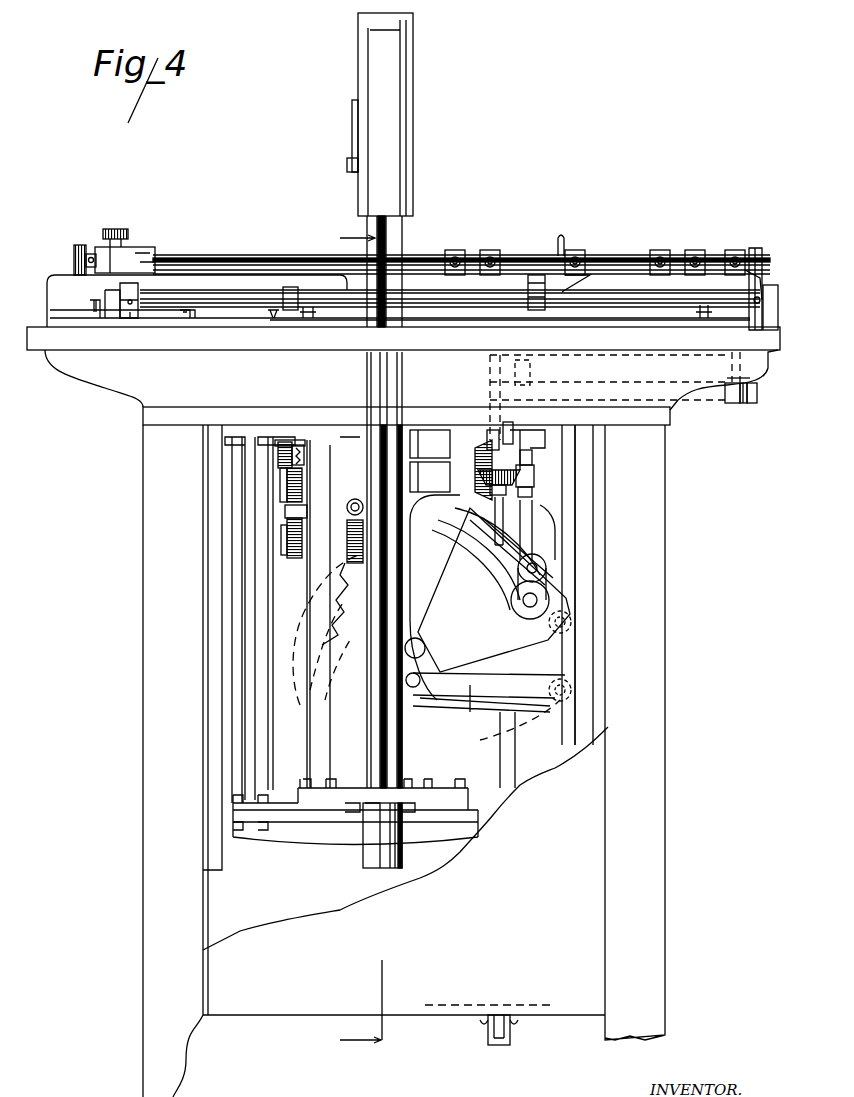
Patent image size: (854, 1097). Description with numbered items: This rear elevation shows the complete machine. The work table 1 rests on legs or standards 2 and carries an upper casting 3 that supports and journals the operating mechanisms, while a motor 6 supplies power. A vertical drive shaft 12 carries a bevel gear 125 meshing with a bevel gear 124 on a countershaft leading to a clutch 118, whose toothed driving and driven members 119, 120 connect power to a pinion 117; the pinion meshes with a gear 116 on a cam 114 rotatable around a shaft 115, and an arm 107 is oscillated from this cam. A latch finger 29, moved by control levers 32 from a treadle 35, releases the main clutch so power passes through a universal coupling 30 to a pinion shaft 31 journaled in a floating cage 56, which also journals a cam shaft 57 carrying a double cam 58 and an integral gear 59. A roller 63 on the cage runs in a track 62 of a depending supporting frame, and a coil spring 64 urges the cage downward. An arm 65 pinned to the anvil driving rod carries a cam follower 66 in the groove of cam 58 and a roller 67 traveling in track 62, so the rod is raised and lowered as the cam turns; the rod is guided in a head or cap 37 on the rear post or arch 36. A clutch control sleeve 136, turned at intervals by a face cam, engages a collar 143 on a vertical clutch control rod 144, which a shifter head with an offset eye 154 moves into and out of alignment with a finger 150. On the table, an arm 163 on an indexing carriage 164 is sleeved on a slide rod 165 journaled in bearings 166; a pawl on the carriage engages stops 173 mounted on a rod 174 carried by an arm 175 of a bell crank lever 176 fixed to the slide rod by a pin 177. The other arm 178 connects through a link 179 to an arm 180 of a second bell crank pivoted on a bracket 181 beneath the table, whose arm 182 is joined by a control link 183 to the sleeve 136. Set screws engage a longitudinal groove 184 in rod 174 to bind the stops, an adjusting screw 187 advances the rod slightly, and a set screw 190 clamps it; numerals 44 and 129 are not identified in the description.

The work table 1 is at (36, 345).
The legs 2 is at (190, 1016).
The upper casting 3 is at (116, 380).
The motor 6 is at (352, 640).
The drive shaft 12 is at (490, 597).
The latch finger 29 is at (540, 515).
The universal coupling 30 is at (548, 576).
The pinion shaft 31 is at (538, 601).
The control levers 32 is at (511, 551).
The treadle 35 is at (508, 1030).
The rear post 36 is at (405, 230).
The head 37 is at (412, 86).
The bracket 44 is at (352, 127).
The floating cage 56 is at (546, 563).
The cam shaft 57 is at (432, 640).
The double cam 58 is at (452, 590).
The gear 59 is at (319, 726).
The track 62 is at (602, 746).
The roller 63 is at (572, 622).
The coil spring 64 is at (347, 540).
The arm 65 is at (506, 718).
The cam follower 66 is at (417, 666).
The roller 67 is at (574, 690).
The arm 107 is at (288, 512).
The cam 114 is at (282, 540).
The shaft 115 is at (485, 497).
The gear 116 is at (287, 490).
The pinion 117 is at (278, 458).
The clutch 118 is at (300, 445).
The driving clutch member 119 is at (302, 462).
The driven clutch member 120 is at (288, 441).
The bevel gear 124 is at (480, 455).
The bevel gear 125 is at (478, 470).
The shaft 129 is at (487, 427).
The clutch control sleeve 136 is at (535, 483).
The collar 143 is at (532, 492).
The clutch control rod 144 is at (556, 535).
The finger 150 is at (528, 446).
The offset eye 154 is at (533, 466).
The arm 163 is at (561, 250).
The indexing carriage 164 is at (536, 283).
The slide rod 165 is at (619, 298).
The bearings 166 is at (105, 295).
The stops 173 is at (696, 252).
The rod 174 is at (515, 257).
The arm 175 is at (146, 256).
The bell crank lever 176 is at (125, 284).
The pin 177 is at (133, 303).
The arm 178 is at (757, 275).
The link 179 is at (740, 405).
The arm 180 is at (728, 400).
The bracket 181 is at (760, 390).
The arm 182 is at (505, 438).
The control link 183 is at (486, 428).
The longitudinal groove 184 is at (259, 257).
The adjusting screw 187 is at (80, 245).
The set screw 190 is at (110, 229).